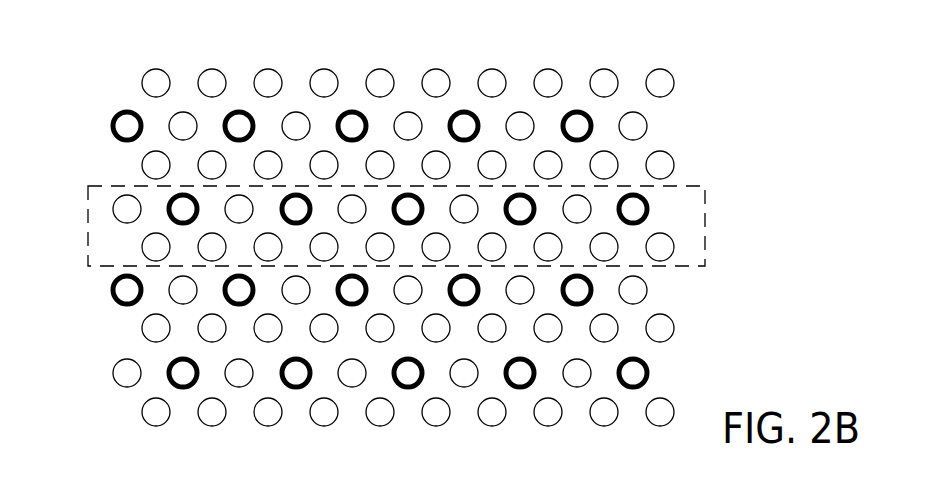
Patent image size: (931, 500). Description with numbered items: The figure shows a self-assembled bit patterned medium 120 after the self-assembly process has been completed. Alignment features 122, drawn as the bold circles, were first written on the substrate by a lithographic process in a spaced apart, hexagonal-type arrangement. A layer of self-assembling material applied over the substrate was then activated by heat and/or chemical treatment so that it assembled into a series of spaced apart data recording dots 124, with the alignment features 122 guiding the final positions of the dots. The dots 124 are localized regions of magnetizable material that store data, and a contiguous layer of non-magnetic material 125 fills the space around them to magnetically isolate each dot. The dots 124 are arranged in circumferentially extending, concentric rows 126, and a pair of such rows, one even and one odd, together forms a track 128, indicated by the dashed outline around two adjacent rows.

The medium 120 is at (725, 71).
The alignment features 122 is at (463, 110).
The data recording dots 124 is at (380, 68).
The non-magnetic material 125 is at (412, 436).
The rows 126 is at (114, 162).
The track 128 is at (695, 184).